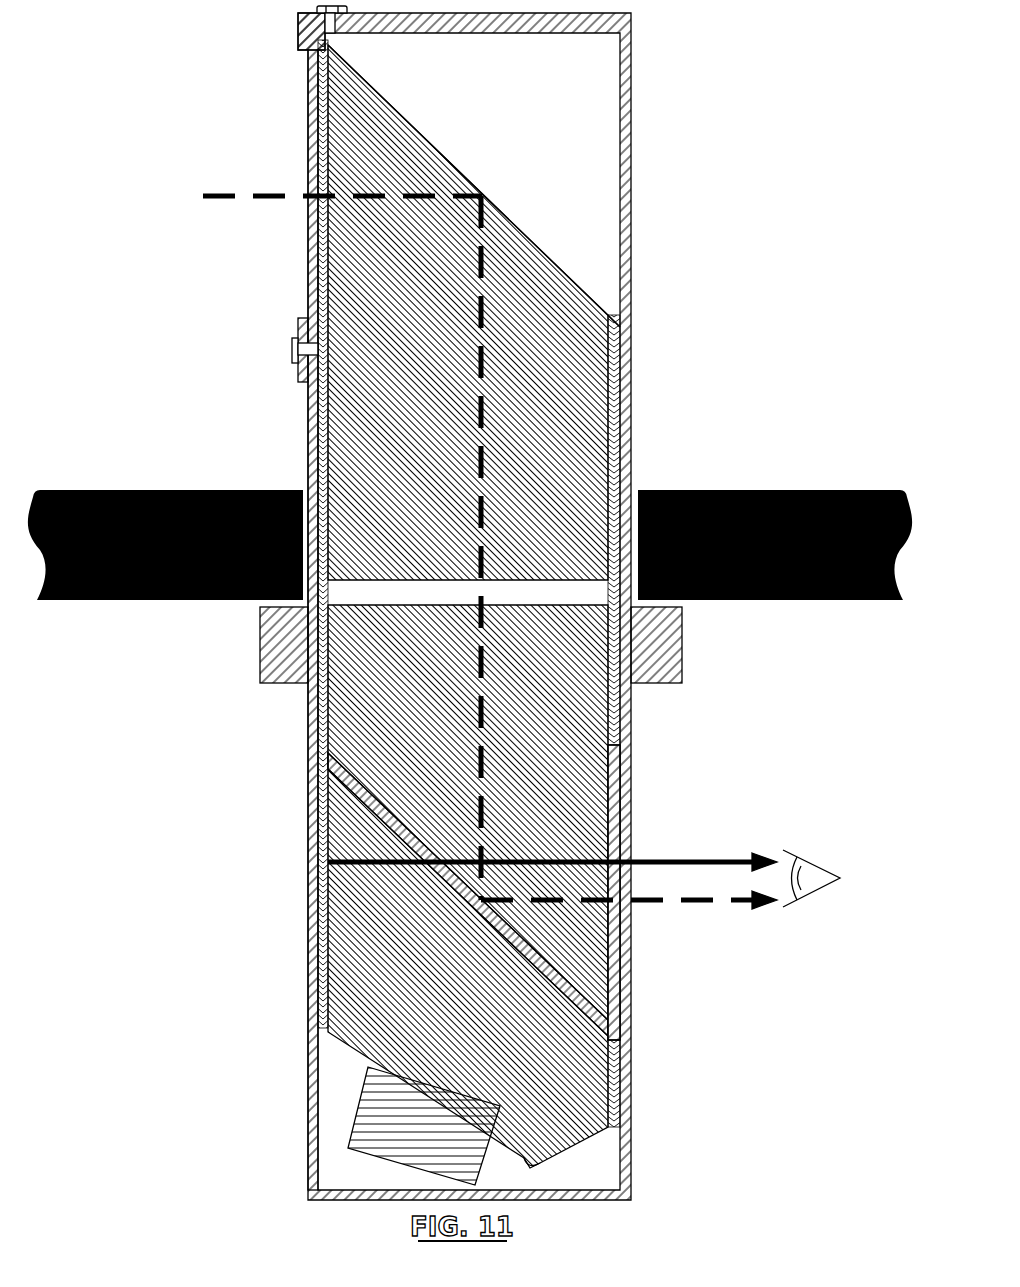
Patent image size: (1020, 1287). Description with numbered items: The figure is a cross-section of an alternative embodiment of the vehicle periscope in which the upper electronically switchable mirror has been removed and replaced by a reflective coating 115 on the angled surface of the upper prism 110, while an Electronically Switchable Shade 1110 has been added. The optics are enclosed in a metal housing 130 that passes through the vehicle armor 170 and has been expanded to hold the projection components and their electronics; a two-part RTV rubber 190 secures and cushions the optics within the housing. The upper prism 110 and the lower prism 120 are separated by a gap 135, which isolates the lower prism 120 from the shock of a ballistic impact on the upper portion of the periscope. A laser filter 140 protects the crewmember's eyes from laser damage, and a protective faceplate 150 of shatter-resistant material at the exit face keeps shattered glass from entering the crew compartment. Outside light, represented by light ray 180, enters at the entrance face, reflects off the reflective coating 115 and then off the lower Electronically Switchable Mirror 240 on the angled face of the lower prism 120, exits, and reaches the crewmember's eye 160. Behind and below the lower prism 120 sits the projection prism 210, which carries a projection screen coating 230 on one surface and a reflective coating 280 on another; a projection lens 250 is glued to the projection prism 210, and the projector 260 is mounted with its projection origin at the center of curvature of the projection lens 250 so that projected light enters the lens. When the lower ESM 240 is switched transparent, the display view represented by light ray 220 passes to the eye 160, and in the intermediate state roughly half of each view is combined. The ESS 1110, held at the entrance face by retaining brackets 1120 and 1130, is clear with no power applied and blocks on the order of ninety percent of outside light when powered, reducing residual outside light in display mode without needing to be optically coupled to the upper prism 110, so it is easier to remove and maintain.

The upper prism 110 is at (519, 425).
The reflective coating 115 is at (549, 261).
The lower prism 120 is at (518, 755).
The housing 130 is at (626, 57).
The gap 135 is at (307, 690).
The laser filter 140 is at (307, 292).
The protective faceplate 150 is at (632, 964).
The crewmember's eye 160 is at (805, 850).
The armor 170 is at (749, 488).
The light ray 180 is at (260, 193).
The RTV rubber 190 is at (630, 355).
The projection prism 210 is at (448, 978).
The light ray 220 is at (318, 884).
The projection screen coating 230 is at (314, 785).
The lower Electronically Switchable Mirror 240 is at (318, 915).
The projection lens 250 is at (532, 1166).
The projector 260 is at (402, 1138).
The reflective coating 280 is at (623, 1073).
The Electronically Switchable Shade 1110 is at (307, 256).
The retaining bracket 1120 is at (300, 34).
The retaining bracket 1130 is at (300, 332).